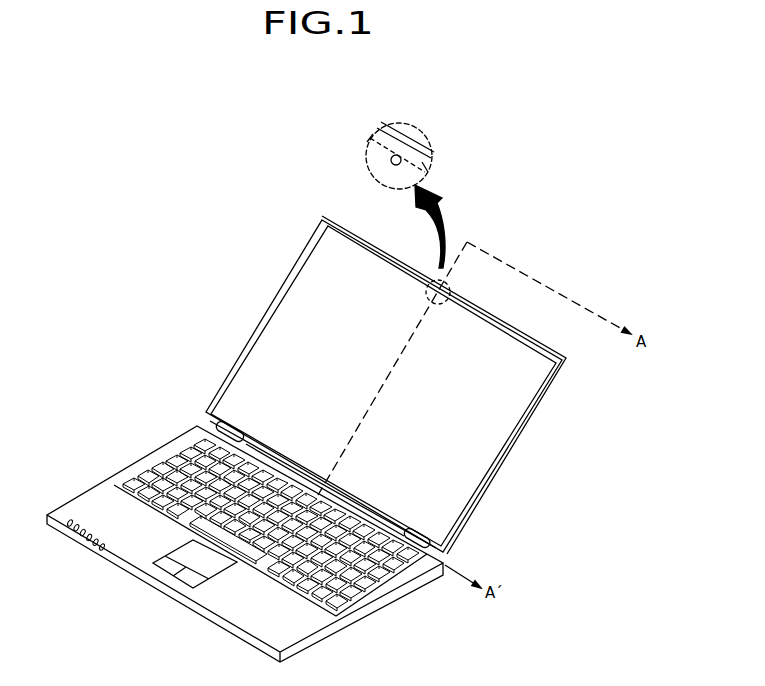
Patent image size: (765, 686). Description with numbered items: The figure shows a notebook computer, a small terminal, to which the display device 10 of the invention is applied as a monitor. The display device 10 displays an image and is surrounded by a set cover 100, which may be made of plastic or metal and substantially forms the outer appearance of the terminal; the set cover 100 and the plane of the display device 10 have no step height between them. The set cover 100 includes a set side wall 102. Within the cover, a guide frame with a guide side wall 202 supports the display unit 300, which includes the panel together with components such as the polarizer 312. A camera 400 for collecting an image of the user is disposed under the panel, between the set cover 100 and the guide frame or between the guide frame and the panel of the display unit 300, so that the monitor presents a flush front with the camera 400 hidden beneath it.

The display device 10 is at (306, 439).
The set cover 100 is at (507, 453).
The set side wall 102 is at (400, 122).
The guide side wall 202 is at (430, 162).
The display unit 300 is at (470, 487).
The polarizer 312 is at (372, 167).
The camera 400 is at (418, 139).